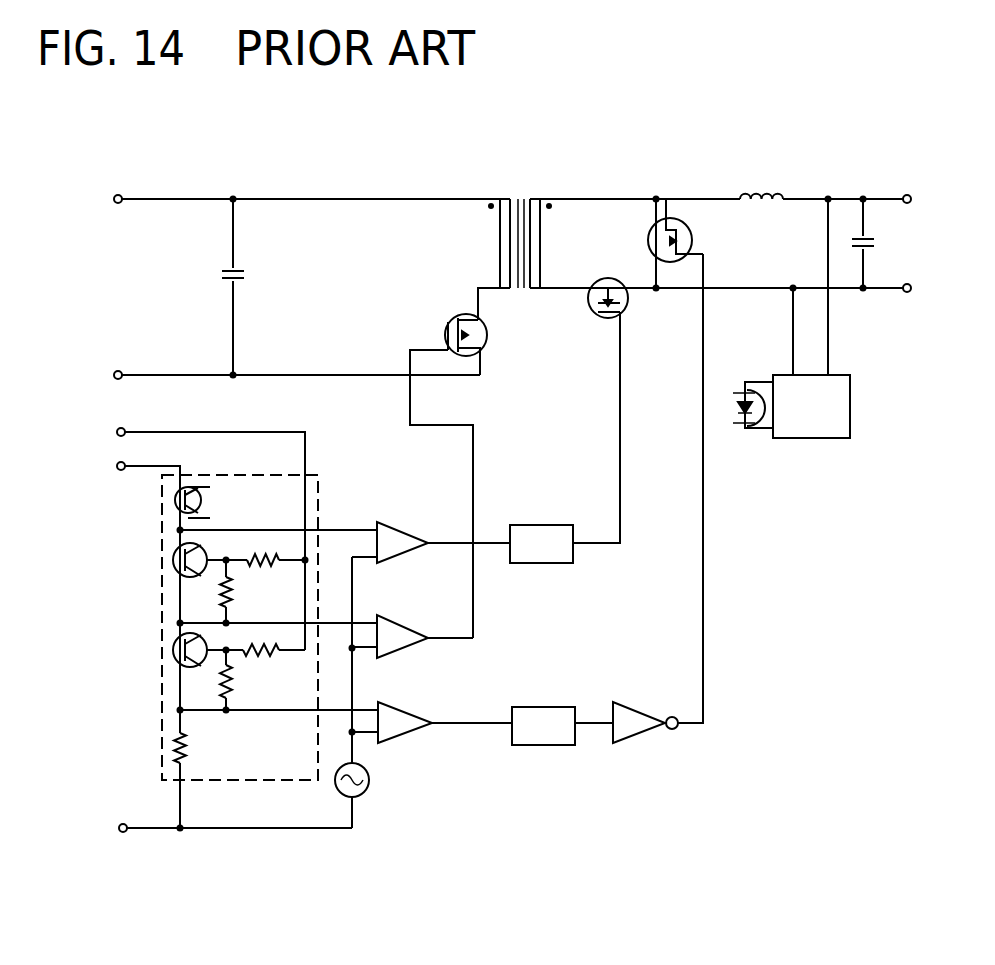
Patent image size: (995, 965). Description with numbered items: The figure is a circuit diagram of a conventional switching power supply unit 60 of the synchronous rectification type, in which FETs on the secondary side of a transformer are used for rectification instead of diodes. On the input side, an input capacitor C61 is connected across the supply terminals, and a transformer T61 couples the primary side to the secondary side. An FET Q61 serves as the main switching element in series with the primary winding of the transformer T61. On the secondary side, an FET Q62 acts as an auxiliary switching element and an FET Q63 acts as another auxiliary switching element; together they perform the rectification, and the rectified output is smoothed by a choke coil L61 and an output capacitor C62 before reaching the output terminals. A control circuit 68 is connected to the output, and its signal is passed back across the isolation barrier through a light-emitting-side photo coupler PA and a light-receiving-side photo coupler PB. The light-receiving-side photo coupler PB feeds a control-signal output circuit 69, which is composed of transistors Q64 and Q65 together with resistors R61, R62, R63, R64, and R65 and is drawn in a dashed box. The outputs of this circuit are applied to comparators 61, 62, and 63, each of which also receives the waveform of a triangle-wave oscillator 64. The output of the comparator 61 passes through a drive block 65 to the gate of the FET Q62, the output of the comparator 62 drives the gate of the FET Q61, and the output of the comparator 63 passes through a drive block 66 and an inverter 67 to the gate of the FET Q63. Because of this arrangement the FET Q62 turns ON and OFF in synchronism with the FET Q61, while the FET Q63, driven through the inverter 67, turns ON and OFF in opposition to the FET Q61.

The switching power supply unit 60 is at (860, 114).
The comparator 61 is at (398, 540).
The comparator 62 is at (398, 635).
The comparator 63 is at (398, 718).
The triangle-wave oscillator 64 is at (366, 792).
The drive circuit 65 is at (541, 532).
The drive circuit 66 is at (543, 714).
The inverter 67 is at (633, 716).
The control circuit 68 is at (846, 412).
The control-signal output circuit 69 is at (268, 773).
The input capacitor C61 is at (213, 287).
The output capacitor C62 is at (884, 243).
The choke coil L61 is at (783, 183).
The transformer T61 is at (520, 229).
The FET (main switching element) Q61 is at (487, 340).
The FET (auxiliary switching element) Q62 is at (626, 310).
The FET (auxiliary switching element) Q63 is at (667, 196).
The transistor Q64 is at (175, 562).
The transistor Q65 is at (175, 652).
The light-emitting-side photo coupler PA is at (755, 438).
The light-receiving-side photo coupler PB is at (175, 502).
The resistor R61 is at (204, 748).
The resistor R62 is at (265, 551).
The resistor R63 is at (246, 591).
The resistor R64 is at (265, 662).
The resistor R65 is at (247, 680).